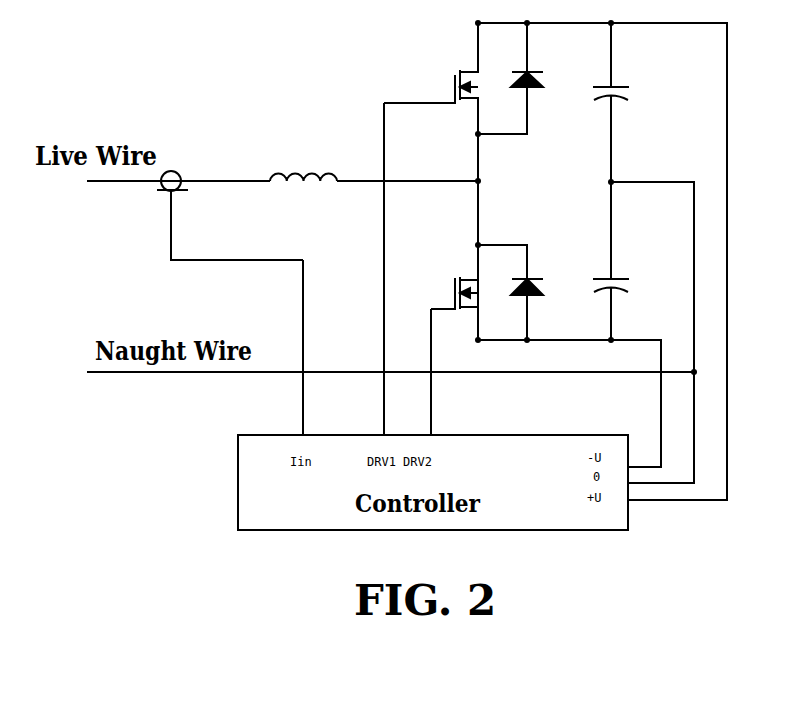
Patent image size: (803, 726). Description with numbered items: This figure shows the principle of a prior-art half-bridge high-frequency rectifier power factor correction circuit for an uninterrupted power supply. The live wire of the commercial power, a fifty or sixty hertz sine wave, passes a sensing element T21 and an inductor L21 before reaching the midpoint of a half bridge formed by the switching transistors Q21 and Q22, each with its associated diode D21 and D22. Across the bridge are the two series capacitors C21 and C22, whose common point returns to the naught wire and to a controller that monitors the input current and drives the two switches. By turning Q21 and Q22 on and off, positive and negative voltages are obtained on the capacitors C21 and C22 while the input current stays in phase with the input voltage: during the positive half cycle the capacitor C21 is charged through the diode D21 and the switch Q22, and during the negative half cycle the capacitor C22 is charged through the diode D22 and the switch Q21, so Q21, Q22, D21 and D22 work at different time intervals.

The current transformer / current sensor T21 is at (230, 215).
The inductor L21 is at (314, 194).
The switching transistor Q21 is at (431, 78).
The diode D21 is at (510, 78).
The switching transistor Q22 is at (449, 292).
The diode D22 is at (510, 292).
The capacitor C21 is at (622, 102).
The capacitor C22 is at (622, 261).